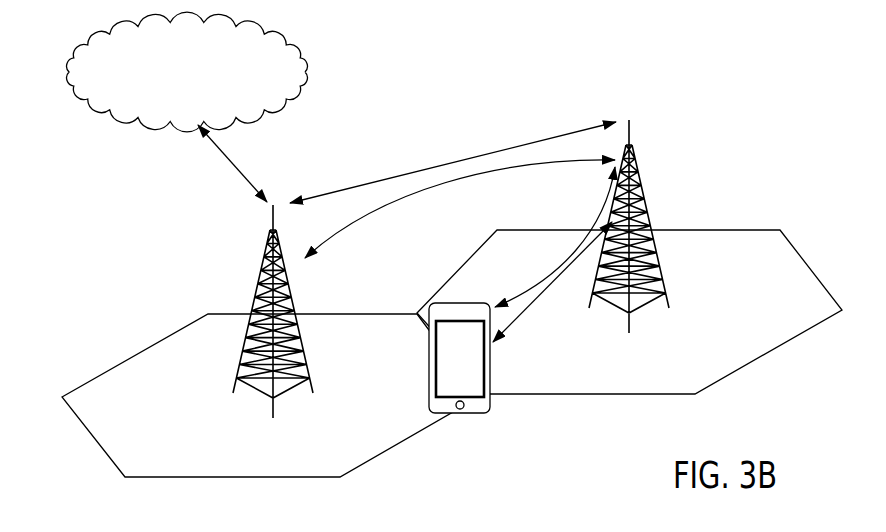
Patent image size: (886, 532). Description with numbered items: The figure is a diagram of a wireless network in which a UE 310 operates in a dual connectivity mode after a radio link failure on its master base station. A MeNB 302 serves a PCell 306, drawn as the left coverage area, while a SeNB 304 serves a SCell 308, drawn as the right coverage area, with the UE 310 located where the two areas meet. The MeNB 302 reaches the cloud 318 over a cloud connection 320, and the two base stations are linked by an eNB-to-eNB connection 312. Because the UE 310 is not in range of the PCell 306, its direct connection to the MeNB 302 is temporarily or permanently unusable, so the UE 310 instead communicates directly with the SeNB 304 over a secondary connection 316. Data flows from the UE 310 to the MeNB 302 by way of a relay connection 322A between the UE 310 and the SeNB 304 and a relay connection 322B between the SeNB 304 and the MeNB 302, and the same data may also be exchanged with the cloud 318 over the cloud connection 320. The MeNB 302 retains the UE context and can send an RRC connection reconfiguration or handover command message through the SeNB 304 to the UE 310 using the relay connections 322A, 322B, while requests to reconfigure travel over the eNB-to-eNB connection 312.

The MeNB 302 is at (255, 303).
The SeNB 304 is at (641, 177).
The PCell 306 is at (133, 388).
The SCell 308 is at (647, 380).
The UE 310 is at (463, 417).
The eNB-to-eNB connection 312 is at (457, 162).
The secondary connection 316 is at (532, 317).
The cloud 318 is at (307, 62).
The cloud connection 320 is at (220, 155).
The relay connection 322A is at (555, 262).
The relay connection 322B is at (427, 187).